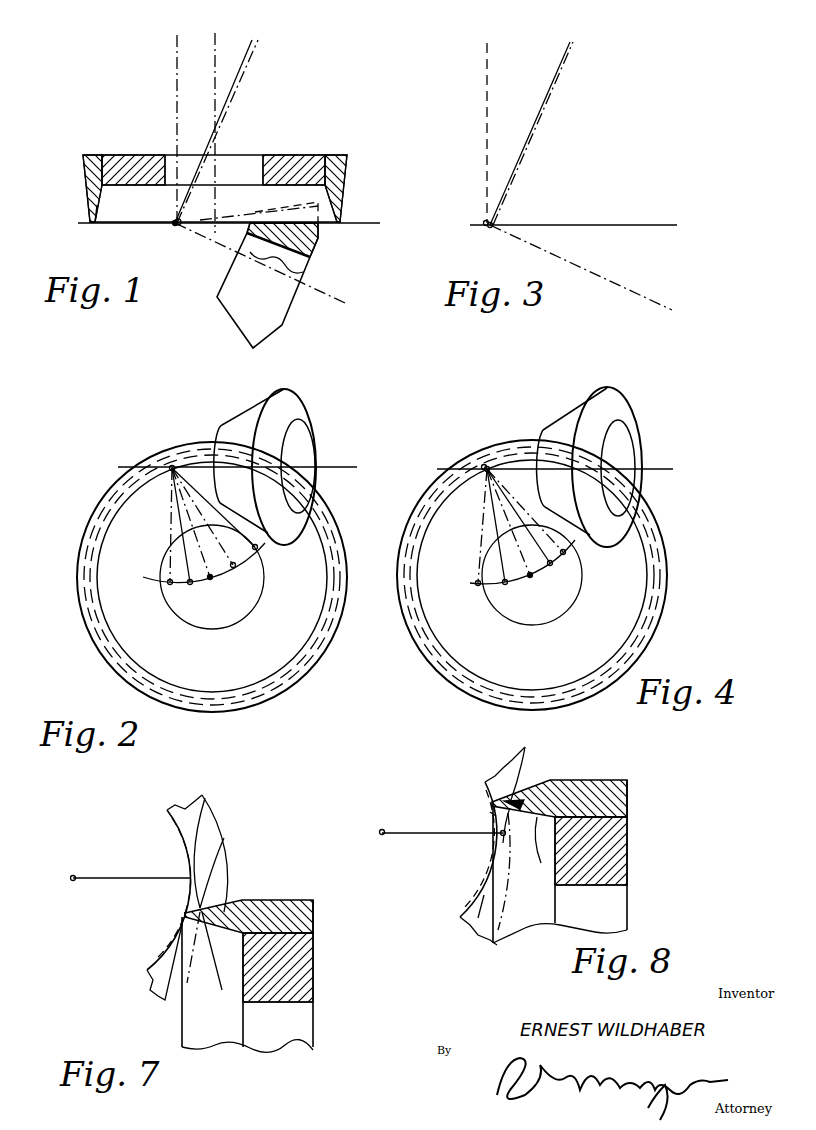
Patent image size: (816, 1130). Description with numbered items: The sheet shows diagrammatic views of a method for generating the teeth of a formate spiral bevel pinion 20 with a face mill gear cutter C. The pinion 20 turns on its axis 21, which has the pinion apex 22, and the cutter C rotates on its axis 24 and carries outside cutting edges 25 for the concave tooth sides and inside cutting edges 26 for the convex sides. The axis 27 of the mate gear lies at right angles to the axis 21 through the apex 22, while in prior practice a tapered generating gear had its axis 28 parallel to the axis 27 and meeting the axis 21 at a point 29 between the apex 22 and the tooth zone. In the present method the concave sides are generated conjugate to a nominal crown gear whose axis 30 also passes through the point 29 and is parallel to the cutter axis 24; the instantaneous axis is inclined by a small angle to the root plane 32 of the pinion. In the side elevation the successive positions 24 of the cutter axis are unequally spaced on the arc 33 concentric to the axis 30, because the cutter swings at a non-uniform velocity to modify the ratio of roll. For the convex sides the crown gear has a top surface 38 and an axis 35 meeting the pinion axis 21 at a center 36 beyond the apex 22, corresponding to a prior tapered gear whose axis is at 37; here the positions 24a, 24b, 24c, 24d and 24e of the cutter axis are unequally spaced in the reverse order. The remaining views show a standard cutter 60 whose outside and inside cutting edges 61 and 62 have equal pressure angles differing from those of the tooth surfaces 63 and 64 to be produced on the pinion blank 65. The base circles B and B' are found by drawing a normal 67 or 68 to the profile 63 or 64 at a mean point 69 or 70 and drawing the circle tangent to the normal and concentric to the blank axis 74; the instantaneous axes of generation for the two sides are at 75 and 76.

In FIG. 1, the spiral bevel pinion 20 is at (262, 337).
In FIG. 2, the spiral bevel pinion 20 is at (298, 400).
In FIG. 4, the spiral bevel pinion 20 is at (617, 400).
In FIG. 1, the pinion axis 21 is at (313, 288).
In FIG. 3, the pinion axis 21 is at (628, 291).
In FIG. 2, the pinion axis 21 is at (335, 467).
In FIG. 4, the pinion axis 21 is at (655, 469).
In FIG. 1, the pinion apex 22 is at (172, 225).
In FIG. 3, the pinion apex 22 is at (490, 228).
In FIG. 2, the pinion apex 22 is at (168, 464).
In FIG. 4, the pinion apex 22 is at (489, 465).
In FIG. 1, the cutter axis 24 is at (215, 70).
In FIG. 2, the cutter axis 24 is at (212, 548).
In FIG. 4, the cutter axis position 24a is at (478, 585).
In FIG. 4, the cutter axis position 24b is at (505, 585).
In FIG. 4, the cutter axis position 24c is at (532, 578).
In FIG. 4, the cutter axis position 24d is at (551, 566).
In FIG. 4, the cutter axis position 24e is at (566, 555).
In FIG. 1, the outside cutting edges 25 is at (345, 205).
In FIG. 1, the inside cutting edges 26 is at (97, 205).
In FIG. 1, the mate gear axis 27 is at (207, 136).
In FIG. 3, the mate gear axis 27 is at (538, 130).
In FIG. 1, the tapered gear axis 28 is at (218, 121).
In FIG. 1, the intersection point 29 is at (178, 237).
In FIG. 2, the intersection point 29 is at (176, 464).
In FIG. 1, the nominal crown gear axis 30 is at (177, 79).
In FIG. 1, the root plane 32 is at (363, 224).
In FIG. 2, the arc 33 is at (150, 578).
In FIG. 3, the nominal crown gear axis 35 is at (487, 83).
In FIG. 3, the crown gear center 36 is at (484, 226).
In FIG. 4, the crown gear center 36 is at (484, 466).
In FIG. 3, the tapered generating gear axis 37 is at (548, 88).
In FIG. 3, the top surface 38 is at (653, 225).
In FIG. 7, the cutter 60 is at (313, 986).
In FIG. 8, the cutter 60 is at (627, 856).
In FIG. 7, the outside cutting edge 61 is at (232, 900).
In FIG. 8, the outside cutting edge 61 is at (520, 794).
In FIG. 7, the inside cutting edge 62 is at (213, 940).
In FIG. 8, the inside cutting edge 62 is at (538, 848).
In FIG. 7, the tooth surface 63 is at (213, 895).
In FIG. 8, the tooth surface 64 is at (517, 820).
In FIG. 7, the pinion blank 65 is at (203, 810).
In FIG. 8, the pinion blank 65 is at (478, 918).
In FIG. 7, the normal 67 is at (215, 972).
In FIG. 8, the normal 68 is at (525, 753).
In FIG. 7, the mean point 69 is at (222, 875).
In FIG. 8, the mean point 70 is at (493, 815).
In FIG. 7, the pinion blank axis 74 is at (73, 881).
In FIG. 8, the pinion blank axis 74 is at (382, 835).
In FIG. 7, the instantaneous axis of generation 75 is at (210, 832).
In FIG. 8, the instantaneous axis of generation 76 is at (505, 846).
In FIG. 1, the face mill gear cutter C is at (340, 170).
In FIG. 2, the face mill gear cutter C is at (268, 660).
In FIG. 4, the face mill gear cutter C is at (470, 665).
In FIG. 7, the base circle B is at (174, 897).
In FIG. 8, the base circle B' is at (483, 846).